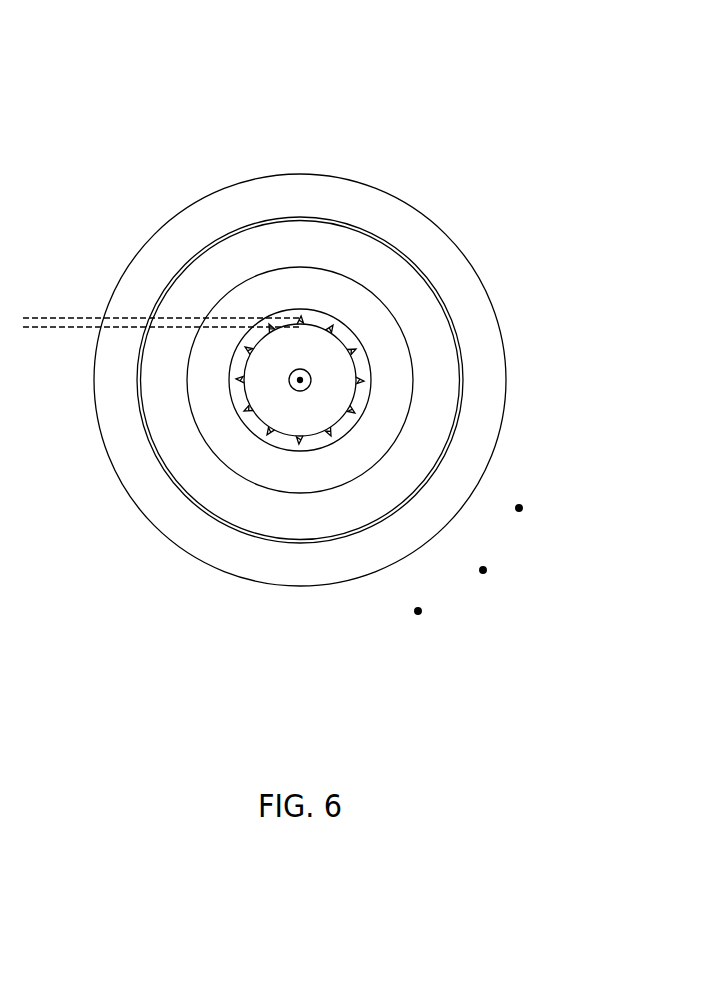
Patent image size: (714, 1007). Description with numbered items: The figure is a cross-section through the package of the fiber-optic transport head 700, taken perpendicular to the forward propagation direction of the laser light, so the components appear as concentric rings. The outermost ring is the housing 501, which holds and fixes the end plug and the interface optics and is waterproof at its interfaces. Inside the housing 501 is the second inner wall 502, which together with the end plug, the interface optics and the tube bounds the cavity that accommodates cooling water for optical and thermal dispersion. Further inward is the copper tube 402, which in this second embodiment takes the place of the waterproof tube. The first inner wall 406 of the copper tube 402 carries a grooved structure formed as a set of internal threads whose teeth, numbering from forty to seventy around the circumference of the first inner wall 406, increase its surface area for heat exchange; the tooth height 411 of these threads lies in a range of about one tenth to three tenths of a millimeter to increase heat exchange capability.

The package of the fiber-optic transport head 700 is at (283, 148).
The housing 501 is at (229, 174).
The second inner wall 502 is at (357, 283).
The copper tube 402 is at (302, 320).
The first inner wall 406 is at (352, 362).
The tooth height 411 is at (38, 367).